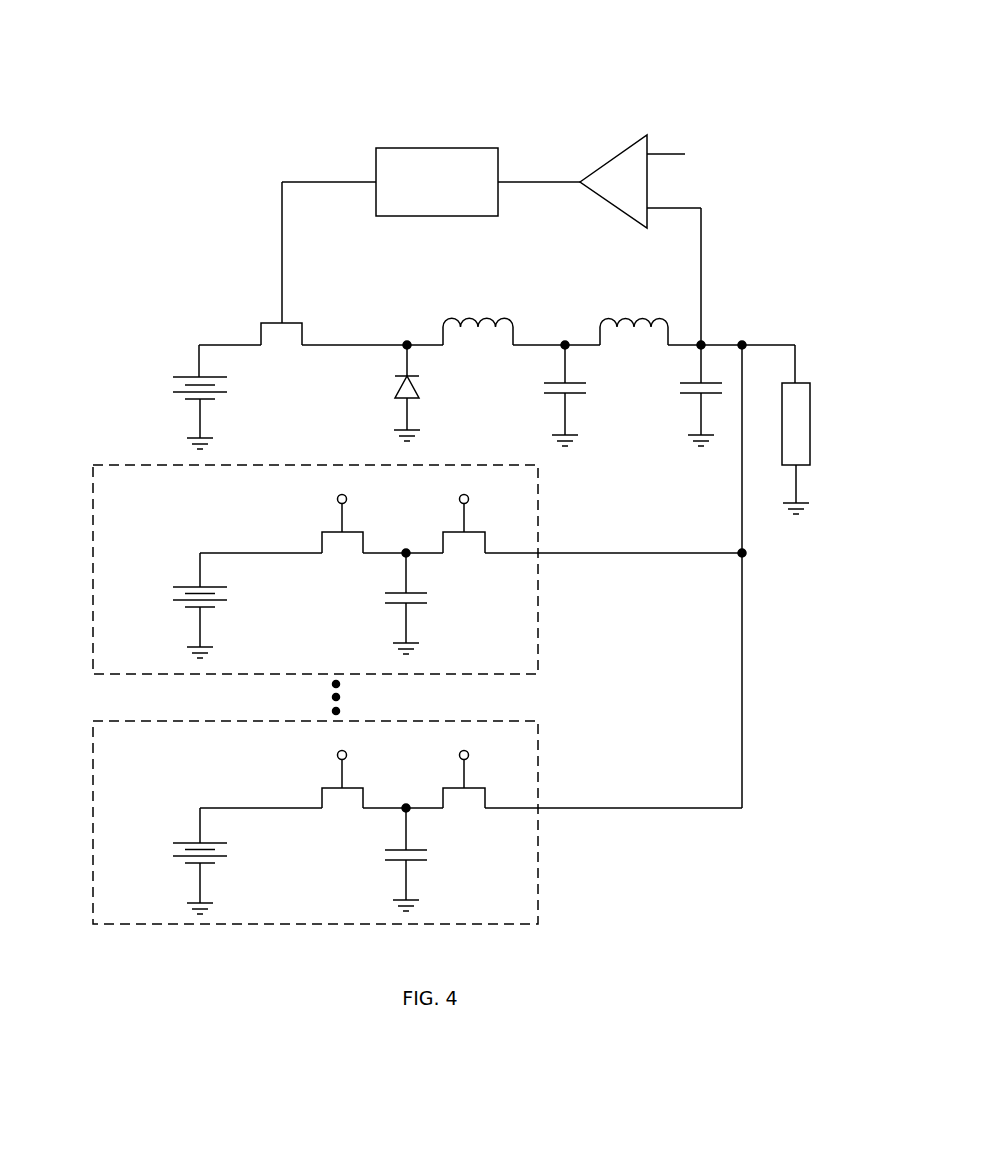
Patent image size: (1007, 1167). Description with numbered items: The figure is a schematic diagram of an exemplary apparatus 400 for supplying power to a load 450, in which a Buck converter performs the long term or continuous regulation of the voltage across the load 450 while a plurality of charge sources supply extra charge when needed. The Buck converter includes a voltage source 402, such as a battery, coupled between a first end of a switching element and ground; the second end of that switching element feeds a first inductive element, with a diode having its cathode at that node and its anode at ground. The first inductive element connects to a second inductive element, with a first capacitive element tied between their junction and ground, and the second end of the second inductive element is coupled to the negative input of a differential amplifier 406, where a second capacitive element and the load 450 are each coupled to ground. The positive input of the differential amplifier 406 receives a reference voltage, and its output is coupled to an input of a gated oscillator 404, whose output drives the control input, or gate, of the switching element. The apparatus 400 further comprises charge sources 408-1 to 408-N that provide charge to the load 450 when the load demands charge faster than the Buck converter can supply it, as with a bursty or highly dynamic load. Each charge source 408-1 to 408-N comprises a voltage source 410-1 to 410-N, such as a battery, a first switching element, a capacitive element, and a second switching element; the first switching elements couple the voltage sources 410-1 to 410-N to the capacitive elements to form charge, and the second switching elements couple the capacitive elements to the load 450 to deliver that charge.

The apparatus 400 is at (231, 53).
The voltage source 402 is at (187, 375).
The gated oscillator 404 is at (440, 146).
The differential amplifier 406 is at (615, 153).
The load 450 is at (806, 380).
The charge source 408-1 is at (93, 575).
The charge source 408-N is at (93, 820).
The voltage source 410-1 is at (188, 585).
The voltage source 410-N is at (188, 840).